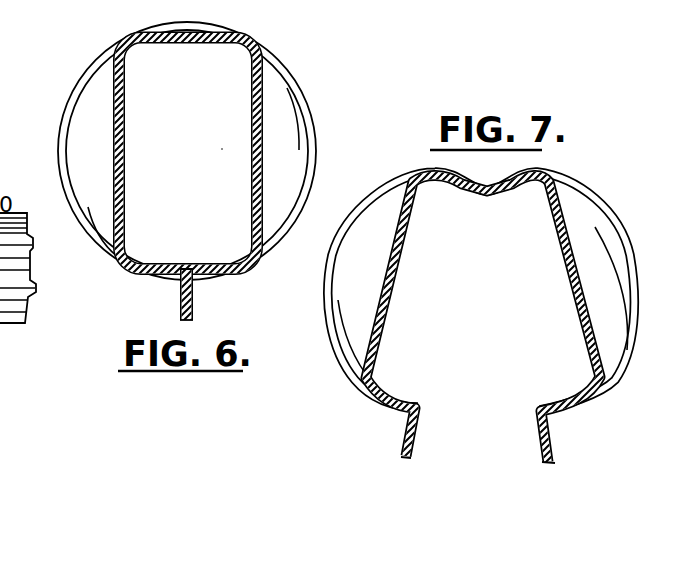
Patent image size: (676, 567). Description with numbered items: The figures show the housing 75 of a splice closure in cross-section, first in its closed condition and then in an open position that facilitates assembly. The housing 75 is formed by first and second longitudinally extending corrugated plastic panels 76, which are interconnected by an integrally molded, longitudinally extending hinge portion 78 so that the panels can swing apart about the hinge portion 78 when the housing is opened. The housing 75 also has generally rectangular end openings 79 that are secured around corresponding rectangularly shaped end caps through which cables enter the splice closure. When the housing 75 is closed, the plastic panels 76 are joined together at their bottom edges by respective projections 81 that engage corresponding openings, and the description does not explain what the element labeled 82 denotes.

In FIG. 6, the housing 75 is at (277, 43).
In FIG. 7, the housing 75 is at (595, 195).
In FIG. 6, the corrugated plastic panels 76 is at (300, 92).
In FIG. 7, the corrugated plastic panels 76 is at (334, 262).
In FIG. 7, the hinge portion 78 is at (482, 190).
In FIG. 6, the end openings 79 is at (222, 148).
In FIG. 6, the projections 81 is at (200, 297).
In FIG. 7, the projections 81 is at (428, 438).
In FIG. 7, the second leg of clip 82 is at (555, 437).